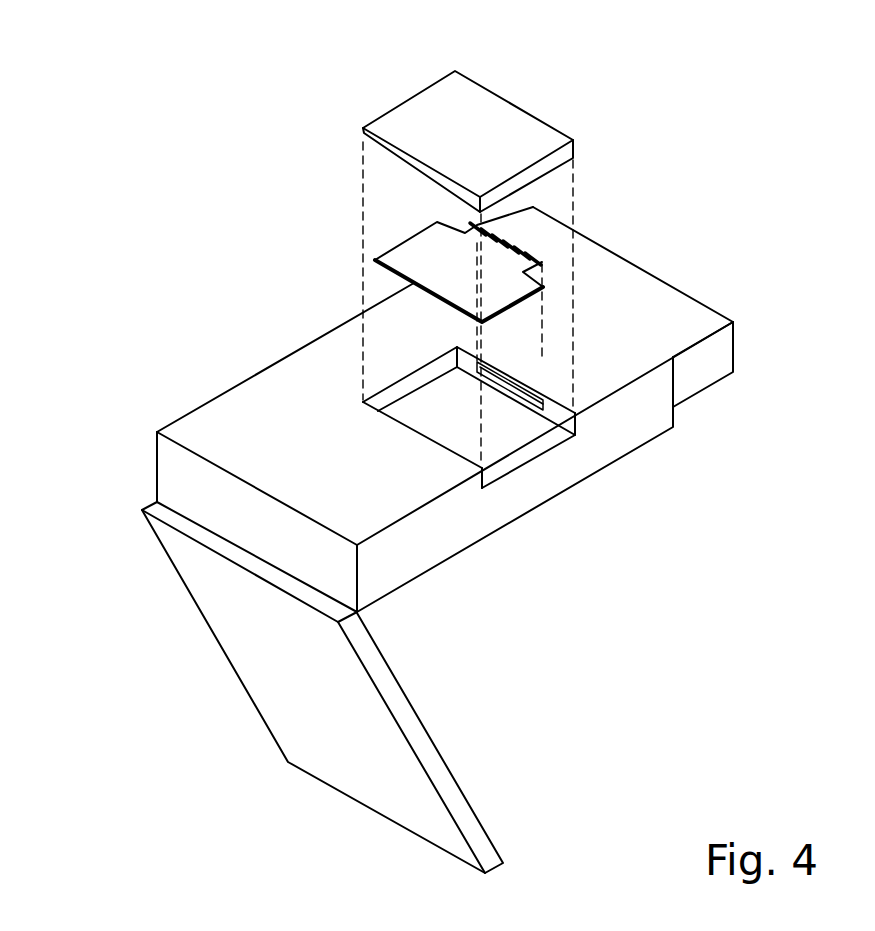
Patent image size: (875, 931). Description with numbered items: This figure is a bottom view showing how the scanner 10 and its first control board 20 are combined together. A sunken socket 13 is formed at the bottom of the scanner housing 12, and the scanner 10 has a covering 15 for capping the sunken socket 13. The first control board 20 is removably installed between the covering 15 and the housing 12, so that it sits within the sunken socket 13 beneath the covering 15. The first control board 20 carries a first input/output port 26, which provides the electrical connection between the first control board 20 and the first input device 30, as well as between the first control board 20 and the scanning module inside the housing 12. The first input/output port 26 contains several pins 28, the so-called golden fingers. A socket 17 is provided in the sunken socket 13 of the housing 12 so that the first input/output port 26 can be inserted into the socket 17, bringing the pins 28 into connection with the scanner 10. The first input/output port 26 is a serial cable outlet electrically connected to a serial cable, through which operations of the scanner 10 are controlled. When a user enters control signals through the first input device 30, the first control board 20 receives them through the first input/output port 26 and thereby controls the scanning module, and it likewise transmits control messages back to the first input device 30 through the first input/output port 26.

The scanner 10 is at (712, 140).
The housing 12 is at (255, 415).
The sunken socket 13 is at (520, 450).
The covering 15 is at (412, 98).
The socket 17 is at (685, 327).
The first control board 20 is at (419, 236).
The first input/output (I/O) port 26 is at (530, 388).
The pins 28 is at (465, 222).
The first input device 30 is at (707, 300).